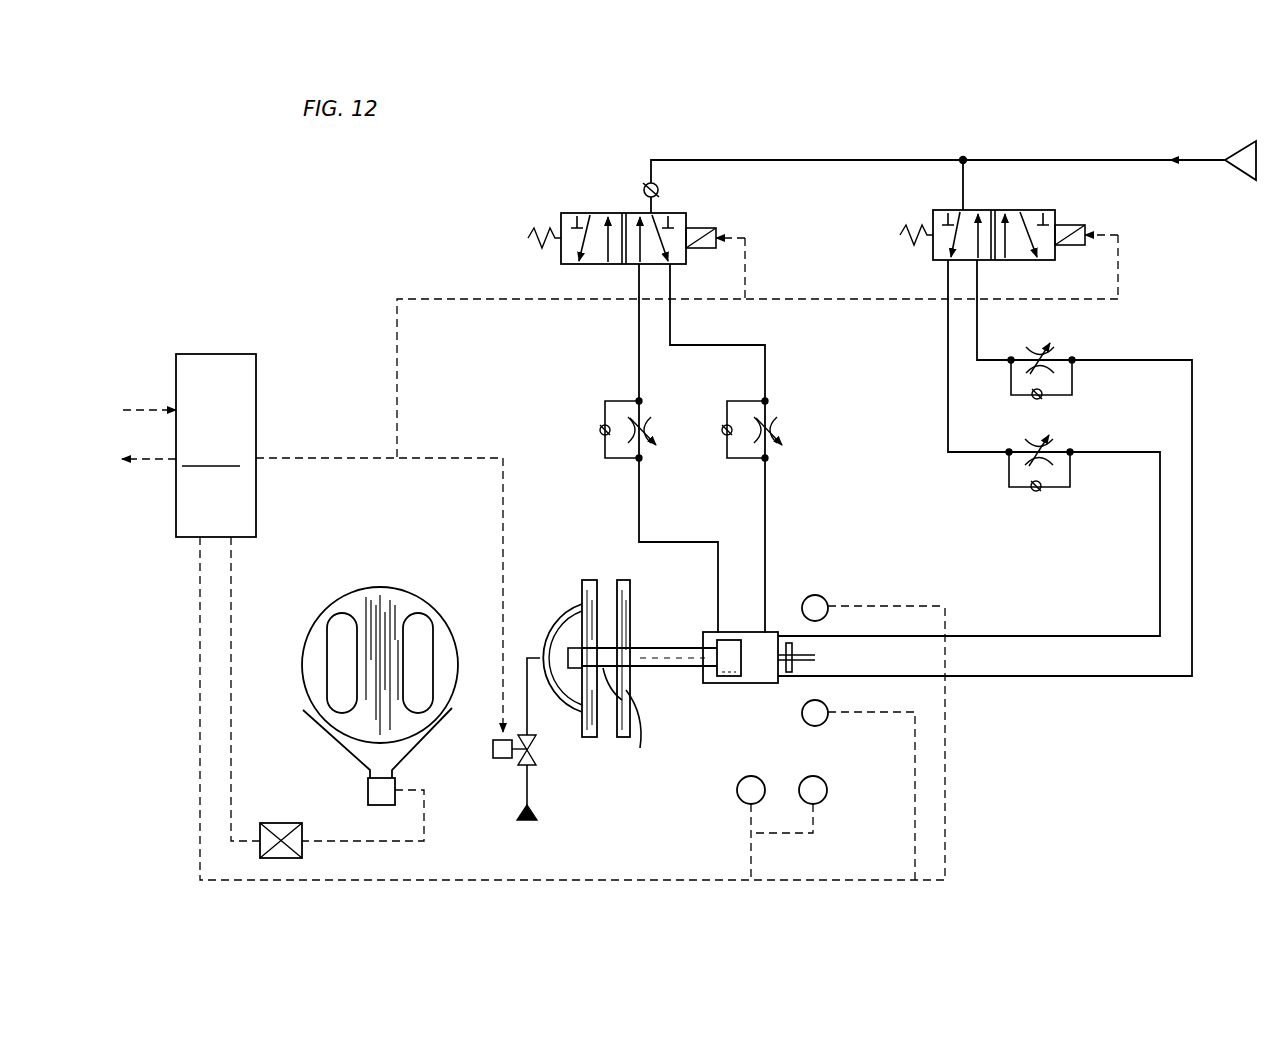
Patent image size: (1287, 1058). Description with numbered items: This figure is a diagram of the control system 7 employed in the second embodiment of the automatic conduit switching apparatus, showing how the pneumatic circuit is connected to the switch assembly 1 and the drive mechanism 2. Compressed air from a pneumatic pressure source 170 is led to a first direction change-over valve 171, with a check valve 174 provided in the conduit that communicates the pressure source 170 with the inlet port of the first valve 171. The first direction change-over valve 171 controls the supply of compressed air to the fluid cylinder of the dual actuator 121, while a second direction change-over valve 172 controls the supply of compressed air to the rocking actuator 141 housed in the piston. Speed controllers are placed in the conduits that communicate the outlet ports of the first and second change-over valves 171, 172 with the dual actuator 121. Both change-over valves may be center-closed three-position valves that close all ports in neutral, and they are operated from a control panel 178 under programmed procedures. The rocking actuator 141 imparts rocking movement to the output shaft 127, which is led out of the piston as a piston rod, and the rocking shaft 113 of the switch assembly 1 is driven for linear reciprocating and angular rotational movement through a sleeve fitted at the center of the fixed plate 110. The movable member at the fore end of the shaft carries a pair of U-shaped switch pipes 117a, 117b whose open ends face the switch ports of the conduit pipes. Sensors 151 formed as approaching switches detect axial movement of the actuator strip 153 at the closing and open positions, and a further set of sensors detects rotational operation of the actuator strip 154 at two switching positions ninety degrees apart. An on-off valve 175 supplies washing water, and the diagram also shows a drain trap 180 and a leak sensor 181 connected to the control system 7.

The switch assembly 1 is at (620, 807).
The drive mechanism 2 is at (705, 738).
The control unit 7 is at (1040, 99).
The fixed plate 110 is at (624, 578).
The rocking shaft 113 is at (627, 725).
The U-shaped switch pipe 117a is at (337, 618).
The U-shaped switch pipe 117b is at (418, 620).
The dual actuator 121 is at (744, 690).
The output shaft 127 is at (665, 648).
The rocking actuator 141 is at (731, 637).
The sensor 151 is at (813, 778).
The actuator strip 153 is at (790, 674).
The actuator strip 154 is at (816, 657).
The pneumatic pressure source 170 is at (1240, 150).
The first direction change-over valve 171 is at (573, 206).
The second direction change-over valve 172 is at (1055, 202).
The check valve 174 is at (644, 185).
The on-off valve 175 is at (533, 755).
The control panel 178 is at (189, 445).
The drain trap 180 is at (420, 733).
The leak sensor 181 is at (366, 793).